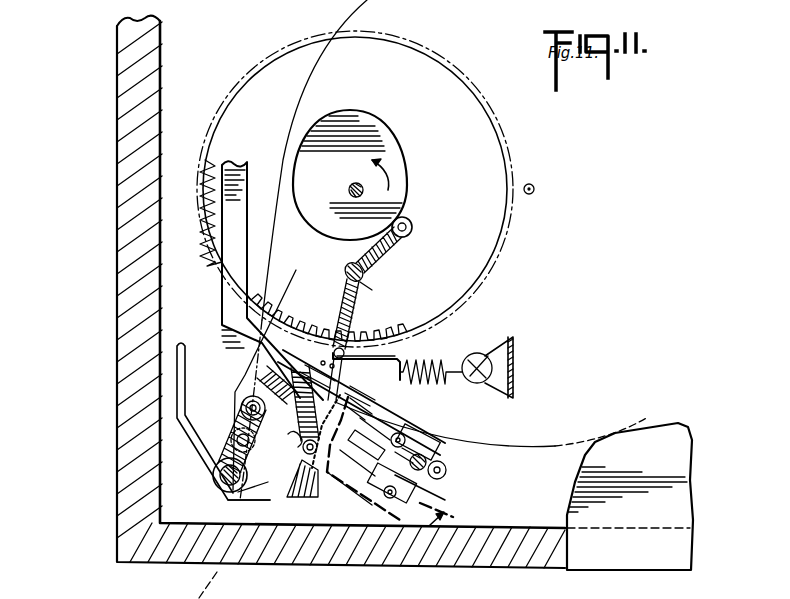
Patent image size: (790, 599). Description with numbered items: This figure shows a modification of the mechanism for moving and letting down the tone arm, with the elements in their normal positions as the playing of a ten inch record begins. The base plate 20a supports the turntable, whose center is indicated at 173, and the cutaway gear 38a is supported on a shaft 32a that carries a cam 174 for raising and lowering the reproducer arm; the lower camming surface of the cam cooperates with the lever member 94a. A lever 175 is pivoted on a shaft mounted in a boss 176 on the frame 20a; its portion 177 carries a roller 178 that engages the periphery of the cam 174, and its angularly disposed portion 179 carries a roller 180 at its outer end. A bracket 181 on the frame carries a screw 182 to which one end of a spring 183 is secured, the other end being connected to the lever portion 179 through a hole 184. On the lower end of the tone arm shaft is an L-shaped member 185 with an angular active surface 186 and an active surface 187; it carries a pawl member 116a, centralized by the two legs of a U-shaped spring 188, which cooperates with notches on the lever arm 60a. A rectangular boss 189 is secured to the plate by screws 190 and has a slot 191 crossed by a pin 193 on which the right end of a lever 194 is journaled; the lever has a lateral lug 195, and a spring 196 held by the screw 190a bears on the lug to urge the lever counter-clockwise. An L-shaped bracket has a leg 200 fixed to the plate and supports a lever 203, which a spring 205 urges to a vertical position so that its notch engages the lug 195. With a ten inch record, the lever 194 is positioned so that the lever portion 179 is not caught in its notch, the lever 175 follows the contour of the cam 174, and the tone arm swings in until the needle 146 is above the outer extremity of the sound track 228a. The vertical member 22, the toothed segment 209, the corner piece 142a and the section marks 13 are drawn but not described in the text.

The needle 146 is at (297, 99).
The cutaway gear 38a is at (460, 98).
The cam 174 is at (384, 137).
The shaft 32a is at (350, 186).
The center of the turntable 173 is at (534, 192).
The roller 178 is at (410, 222).
The lever portion 177 is at (392, 254).
The lever portion 179 is at (345, 296).
The lever 175 is at (370, 272).
The boss 176 is at (372, 290).
The frame bar 22 is at (265, 265).
The lever arm 60a is at (222, 262).
The gear segment 209 is at (310, 328).
The lever member 94a is at (188, 352).
The pawl member 116a is at (258, 385).
The U-shaped spring 188 is at (242, 404).
The angular active surface 186 is at (268, 458).
The L-shaped member 185 is at (262, 485).
The active surface 187 is at (257, 485).
The bracket 142a is at (214, 490).
The roller 180 is at (296, 447).
The screws 190 is at (445, 462).
The screw 190a is at (430, 445).
The boss 189 is at (450, 470).
The spring 196 is at (452, 496).
The slot 191 is at (402, 433).
The pin 193 is at (425, 440).
The lever 194 is at (368, 433).
The lateral lug 195 is at (356, 428).
The spring 205 is at (410, 494).
The bracket leg 200 is at (363, 458).
The lever 203 is at (326, 482).
The hole 184 is at (345, 362).
The spring 183 is at (425, 364).
The screw 182 is at (483, 354).
The bracket 181 is at (516, 366).
The sound track 228a is at (542, 445).
The base plate 20a is at (686, 510).
The section line 13- 13 is at (367, 418).